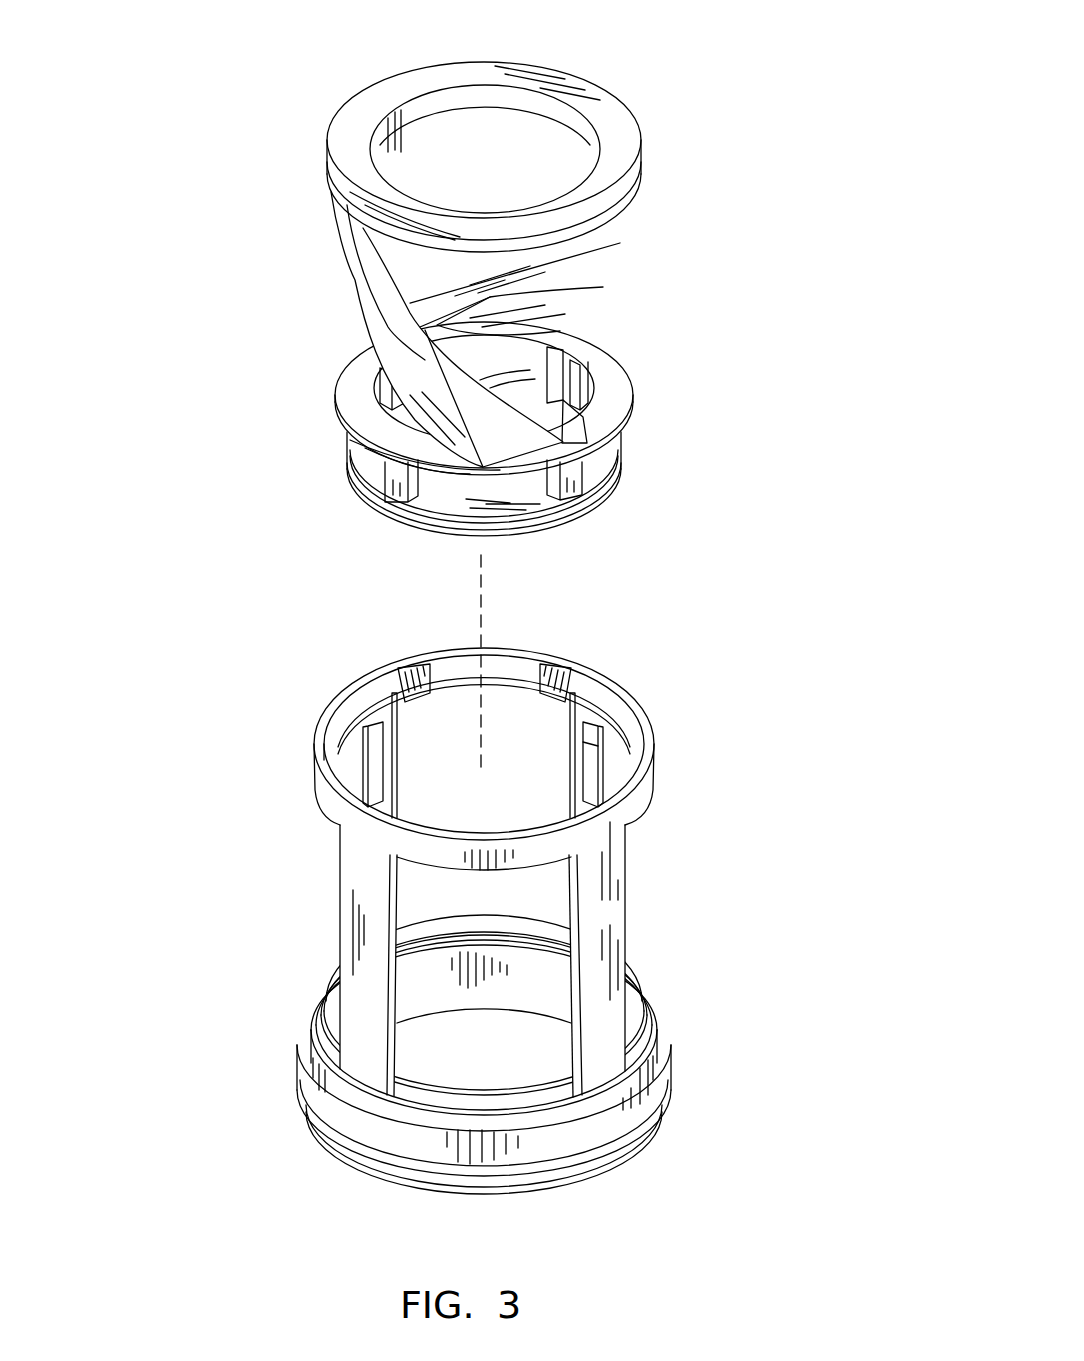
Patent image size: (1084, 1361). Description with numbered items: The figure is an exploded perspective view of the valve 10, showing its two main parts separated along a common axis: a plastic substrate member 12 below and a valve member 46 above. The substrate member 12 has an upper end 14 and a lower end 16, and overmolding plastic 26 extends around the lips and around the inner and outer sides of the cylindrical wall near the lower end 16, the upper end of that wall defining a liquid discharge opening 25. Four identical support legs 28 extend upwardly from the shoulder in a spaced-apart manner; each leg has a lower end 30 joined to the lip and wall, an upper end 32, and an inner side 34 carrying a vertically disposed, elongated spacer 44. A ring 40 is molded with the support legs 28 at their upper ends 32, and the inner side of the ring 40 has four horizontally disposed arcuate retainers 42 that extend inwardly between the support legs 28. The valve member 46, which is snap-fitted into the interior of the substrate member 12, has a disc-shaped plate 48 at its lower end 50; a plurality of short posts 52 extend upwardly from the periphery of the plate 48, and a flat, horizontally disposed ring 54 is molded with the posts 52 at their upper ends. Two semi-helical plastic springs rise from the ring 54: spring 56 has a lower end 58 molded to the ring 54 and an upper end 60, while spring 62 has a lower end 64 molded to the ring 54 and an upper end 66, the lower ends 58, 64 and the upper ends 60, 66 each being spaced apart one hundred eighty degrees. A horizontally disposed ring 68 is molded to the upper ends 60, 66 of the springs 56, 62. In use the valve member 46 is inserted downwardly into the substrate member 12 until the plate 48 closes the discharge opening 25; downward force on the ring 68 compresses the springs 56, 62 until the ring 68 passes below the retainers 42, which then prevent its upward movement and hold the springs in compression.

The valve 10 is at (674, 599).
The substrate member 12 is at (653, 879).
The upper end 14 is at (597, 650).
The lower end 16 is at (628, 1168).
The liquid discharge opening 25 is at (455, 1082).
The overmolding plastic 26 is at (650, 1073).
The support legs 28 is at (390, 768).
The lower end 30 is at (468, 1077).
The upper end 32 is at (358, 850).
The inner side 34 is at (396, 681).
The ring 40 is at (643, 806).
The arcuate retainers 42 is at (518, 665).
The spacer 44 is at (592, 763).
The valve member 46 is at (677, 273).
The disc-shaped plate 48 is at (513, 390).
The lower end 50 is at (415, 535).
The posts 52 is at (577, 473).
The ring 54 is at (625, 392).
The semi-helical plastic spring 56 is at (365, 314).
The lower end 58 is at (565, 442).
The upper end 60 is at (372, 150).
The semi-helical plastic spring 62 is at (515, 268).
The lower end 64 is at (492, 297).
The upper end 66 is at (633, 200).
The ring 68 is at (598, 100).